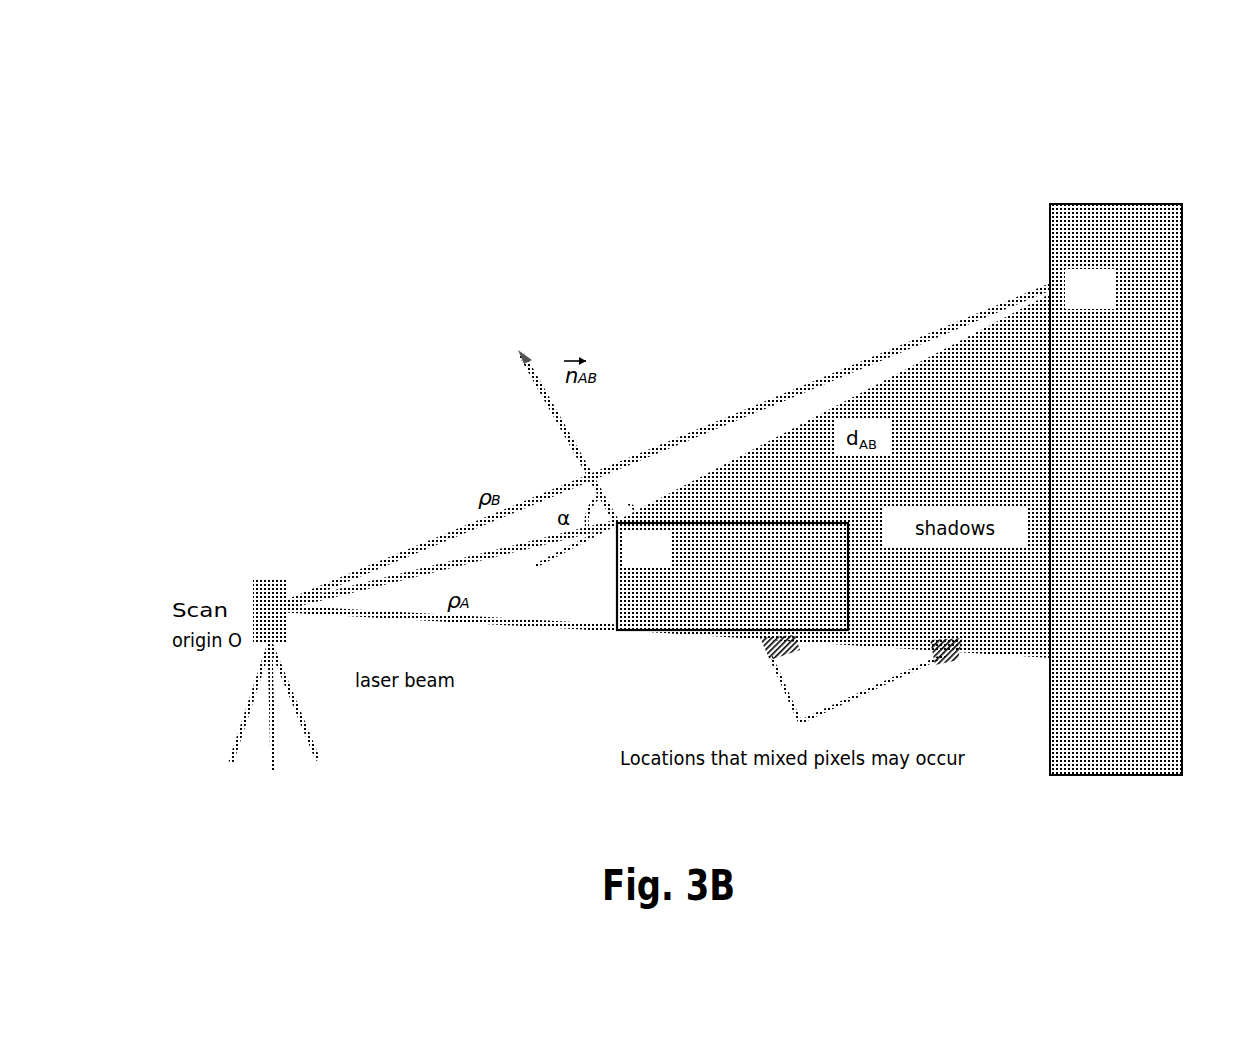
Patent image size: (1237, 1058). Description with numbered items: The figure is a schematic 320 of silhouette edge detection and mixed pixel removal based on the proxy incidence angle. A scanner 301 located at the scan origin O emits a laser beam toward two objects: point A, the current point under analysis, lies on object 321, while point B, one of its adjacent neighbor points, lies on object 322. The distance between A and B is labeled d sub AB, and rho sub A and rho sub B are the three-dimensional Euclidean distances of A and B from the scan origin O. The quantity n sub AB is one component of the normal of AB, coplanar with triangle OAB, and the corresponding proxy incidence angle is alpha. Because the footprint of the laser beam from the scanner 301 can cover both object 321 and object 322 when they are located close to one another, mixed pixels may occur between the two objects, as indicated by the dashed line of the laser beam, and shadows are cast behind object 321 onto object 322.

The scanner 301 is at (275, 605).
The schematic 320 is at (1012, 155).
The object 321 is at (648, 608).
The object 322 is at (1155, 372).